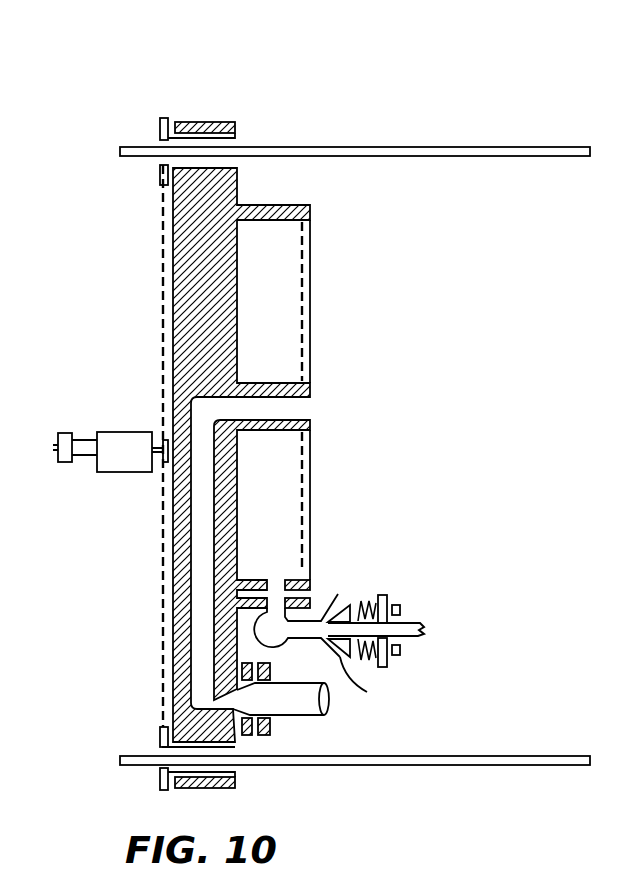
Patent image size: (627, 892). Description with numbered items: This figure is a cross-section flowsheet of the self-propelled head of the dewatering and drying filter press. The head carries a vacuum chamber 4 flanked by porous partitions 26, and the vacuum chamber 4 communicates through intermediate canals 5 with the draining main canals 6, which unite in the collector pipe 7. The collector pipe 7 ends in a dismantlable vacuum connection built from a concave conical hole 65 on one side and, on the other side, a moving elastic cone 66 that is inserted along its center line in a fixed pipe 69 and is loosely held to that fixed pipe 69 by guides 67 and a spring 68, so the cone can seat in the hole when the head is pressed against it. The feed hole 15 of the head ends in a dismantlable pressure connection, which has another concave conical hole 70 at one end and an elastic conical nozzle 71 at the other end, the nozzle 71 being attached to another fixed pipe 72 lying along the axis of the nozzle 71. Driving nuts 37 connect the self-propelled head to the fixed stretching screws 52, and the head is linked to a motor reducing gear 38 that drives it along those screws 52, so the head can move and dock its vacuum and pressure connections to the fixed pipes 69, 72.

The vacuum chamber 4 is at (292, 262).
The intermediate canals 5 is at (272, 580).
The draining main canals 6 is at (310, 598).
The collector pipe 7 is at (270, 636).
The feed hole 15 is at (292, 405).
The porous partition 26 is at (306, 293).
The driving nuts 37 is at (158, 133).
The motor reducing gear 38 is at (135, 442).
The fixed stretching screws 52 is at (540, 152).
The concave conical hole 65 is at (372, 686).
The moving elastic cone 66 is at (352, 657).
The guides 67 is at (400, 612).
The spring 68 is at (370, 603).
The fixed pipe 69 is at (418, 635).
The concave conical hole 70 is at (183, 720).
The elastic conical nozzle 71 is at (255, 702).
The fixed pipe 72 is at (310, 710).